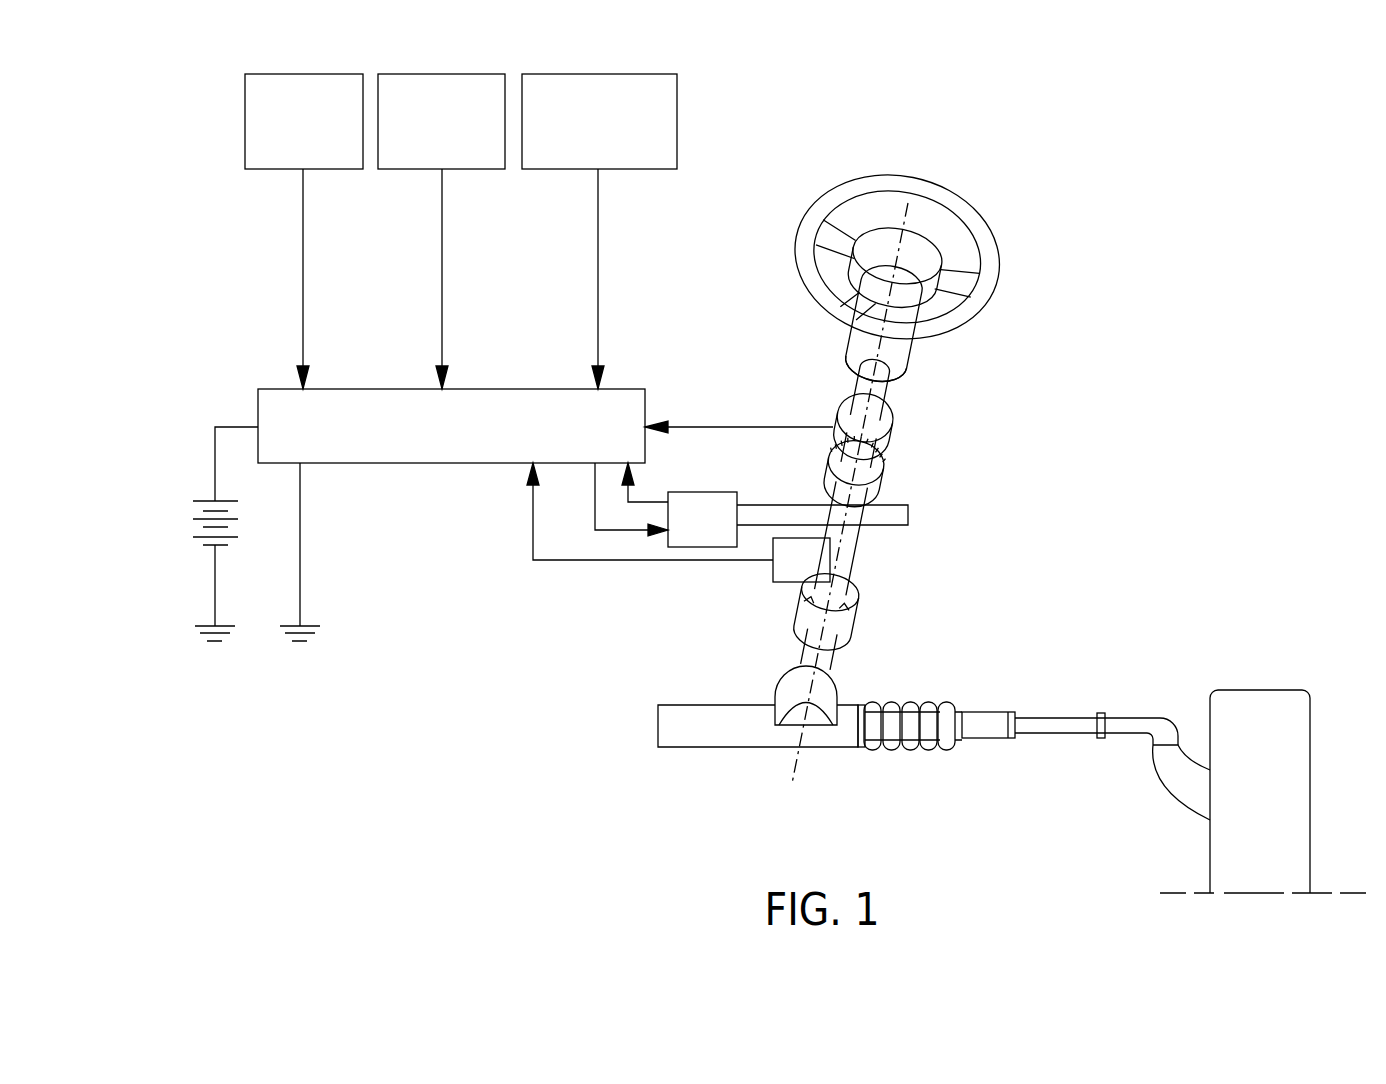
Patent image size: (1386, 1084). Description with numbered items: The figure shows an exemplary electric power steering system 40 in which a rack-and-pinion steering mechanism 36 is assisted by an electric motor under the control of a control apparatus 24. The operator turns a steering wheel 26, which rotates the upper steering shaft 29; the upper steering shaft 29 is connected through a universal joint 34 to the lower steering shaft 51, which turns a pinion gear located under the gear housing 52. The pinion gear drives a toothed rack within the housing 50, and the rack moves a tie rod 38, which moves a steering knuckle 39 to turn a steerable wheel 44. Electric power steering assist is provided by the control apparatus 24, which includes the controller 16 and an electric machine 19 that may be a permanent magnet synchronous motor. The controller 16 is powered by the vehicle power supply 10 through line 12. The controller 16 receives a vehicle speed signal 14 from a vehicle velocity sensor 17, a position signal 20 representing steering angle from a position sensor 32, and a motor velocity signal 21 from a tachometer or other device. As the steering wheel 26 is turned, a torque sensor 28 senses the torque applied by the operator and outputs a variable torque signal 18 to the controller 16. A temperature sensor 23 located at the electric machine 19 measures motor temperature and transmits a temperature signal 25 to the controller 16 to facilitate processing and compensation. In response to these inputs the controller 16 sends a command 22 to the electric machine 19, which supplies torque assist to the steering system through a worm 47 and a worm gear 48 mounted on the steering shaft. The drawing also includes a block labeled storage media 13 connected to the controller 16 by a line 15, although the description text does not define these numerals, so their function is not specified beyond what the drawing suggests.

The vehicle power supply 10 is at (193, 520).
The line 12 is at (232, 425).
The storage media 13 is at (267, 170).
The vehicle speed signal 14 is at (442, 300).
The storage media signal line 15 is at (303, 305).
The controller 16 is at (435, 464).
The vehicle velocity sensor 17 is at (390, 170).
The torque signal 18 is at (757, 425).
The electric machine 19 is at (712, 490).
The position signal 20 is at (654, 568).
The motor velocity signal 21 is at (625, 488).
The command 22 is at (612, 540).
The temperature sensor 23 is at (547, 170).
The control apparatus 24 is at (1095, 398).
The temperature signal 25 is at (598, 300).
The steering wheel 26 is at (950, 205).
The torque sensor 28 is at (880, 418).
The upper steering shaft 29 is at (890, 367).
The position sensor 32 is at (772, 574).
The universal joint 34 is at (857, 608).
The steering mechanism 36 is at (940, 688).
The tie rod 38 is at (1053, 735).
The steering knuckle 39 is at (1178, 782).
The electric power steering system 40 is at (1177, 500).
The steerable wheel 44 is at (1250, 697).
The worm 47 is at (908, 513).
The worm gear 48 is at (866, 480).
The housing 50 is at (697, 745).
The lower steering shaft 51 is at (826, 663).
The gear housing 52 is at (788, 684).